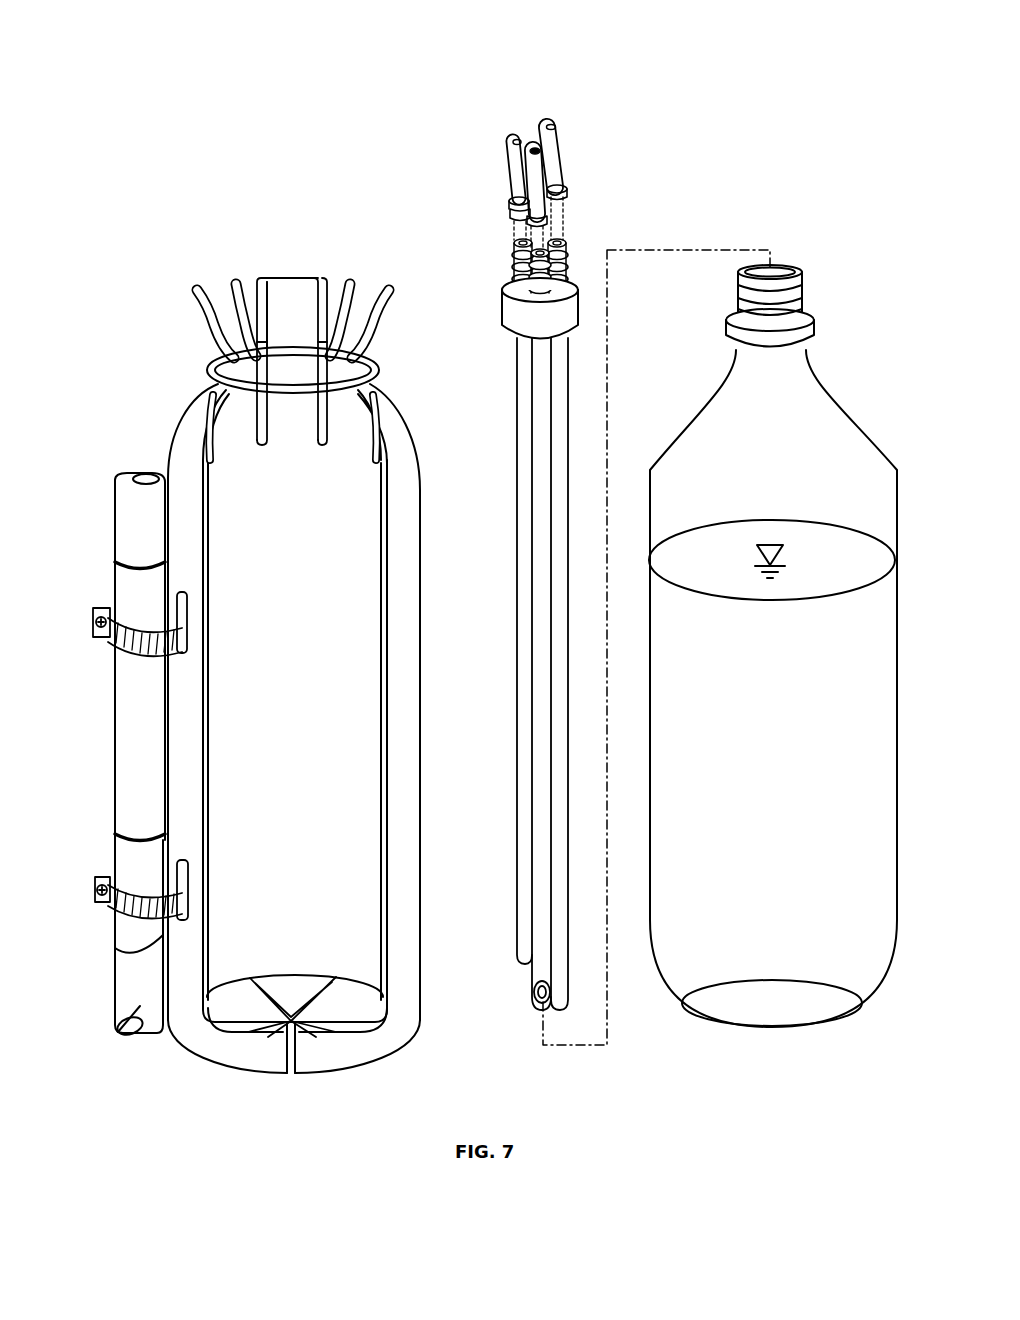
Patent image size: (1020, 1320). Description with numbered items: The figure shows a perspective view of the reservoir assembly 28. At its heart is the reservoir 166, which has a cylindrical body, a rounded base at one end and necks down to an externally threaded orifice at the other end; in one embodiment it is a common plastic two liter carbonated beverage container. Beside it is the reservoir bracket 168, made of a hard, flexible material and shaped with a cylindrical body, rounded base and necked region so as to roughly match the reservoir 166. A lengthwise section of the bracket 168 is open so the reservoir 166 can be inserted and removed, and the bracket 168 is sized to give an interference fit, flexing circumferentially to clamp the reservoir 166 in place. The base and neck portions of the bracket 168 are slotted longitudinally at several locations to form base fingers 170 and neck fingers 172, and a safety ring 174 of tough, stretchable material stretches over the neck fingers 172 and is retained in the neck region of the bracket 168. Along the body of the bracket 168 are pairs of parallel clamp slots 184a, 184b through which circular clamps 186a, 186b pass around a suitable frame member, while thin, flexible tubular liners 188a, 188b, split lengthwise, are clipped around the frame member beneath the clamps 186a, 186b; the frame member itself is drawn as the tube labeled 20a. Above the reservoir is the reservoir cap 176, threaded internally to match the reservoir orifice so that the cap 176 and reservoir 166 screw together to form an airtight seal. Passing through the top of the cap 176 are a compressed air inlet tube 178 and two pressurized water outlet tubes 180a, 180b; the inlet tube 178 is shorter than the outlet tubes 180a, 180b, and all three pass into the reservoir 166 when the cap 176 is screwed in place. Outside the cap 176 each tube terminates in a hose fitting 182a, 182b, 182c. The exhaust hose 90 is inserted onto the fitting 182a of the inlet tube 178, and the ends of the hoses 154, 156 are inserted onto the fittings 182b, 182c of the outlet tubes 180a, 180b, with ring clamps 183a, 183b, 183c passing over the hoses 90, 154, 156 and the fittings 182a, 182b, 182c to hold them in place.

The reservoir assembly 28 is at (251, 69).
The hose 154 is at (536, 152).
The hose 156 is at (553, 130).
The exhaust hose 90 is at (512, 147).
The ring clamp 183a is at (515, 200).
The ring clamp 183b is at (520, 214).
The ring clamp 183c is at (559, 190).
The hose fitting 182a is at (519, 248).
The hose fitting 182b is at (535, 283).
The hose fitting 182c is at (556, 244).
The reservoir cap 176 is at (533, 325).
The neck fingers 172 is at (238, 293).
The safety ring 174 is at (372, 374).
The reservoir bracket 168 is at (185, 448).
The tubular liner 188a is at (140, 585).
The circular clamp 186a is at (133, 627).
The clamp slot 184a is at (168, 662).
The clamp slot 184b is at (183, 870).
The circular clamp 186b is at (122, 908).
The tubular liner 188b is at (135, 937).
The tube end 20a is at (120, 1033).
The base fingers 170 is at (290, 1000).
The compressed air inlet tube 178 is at (520, 723).
The pressurized water outlet tube 180a is at (540, 780).
The pressurized water outlet tube 180b is at (560, 845).
The reservoir 166 is at (802, 410).